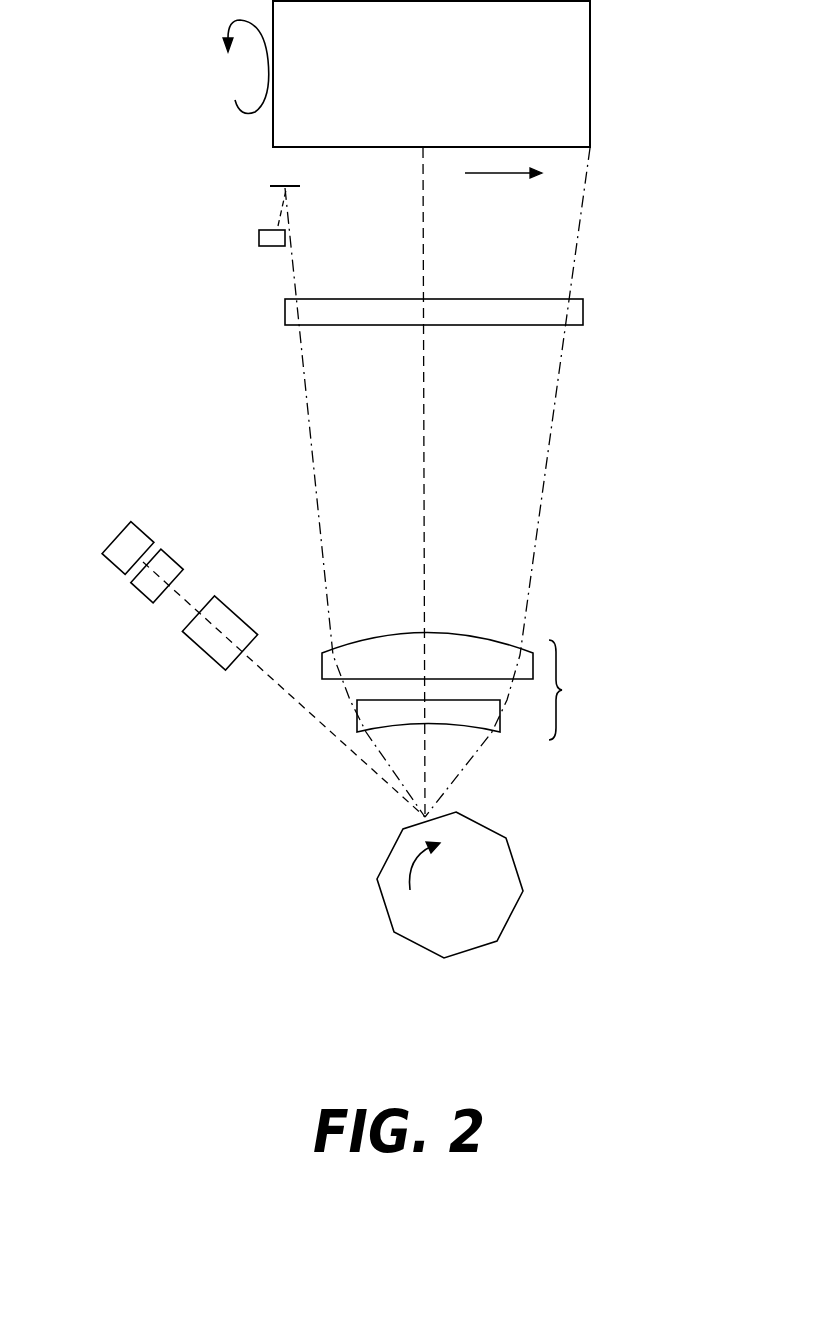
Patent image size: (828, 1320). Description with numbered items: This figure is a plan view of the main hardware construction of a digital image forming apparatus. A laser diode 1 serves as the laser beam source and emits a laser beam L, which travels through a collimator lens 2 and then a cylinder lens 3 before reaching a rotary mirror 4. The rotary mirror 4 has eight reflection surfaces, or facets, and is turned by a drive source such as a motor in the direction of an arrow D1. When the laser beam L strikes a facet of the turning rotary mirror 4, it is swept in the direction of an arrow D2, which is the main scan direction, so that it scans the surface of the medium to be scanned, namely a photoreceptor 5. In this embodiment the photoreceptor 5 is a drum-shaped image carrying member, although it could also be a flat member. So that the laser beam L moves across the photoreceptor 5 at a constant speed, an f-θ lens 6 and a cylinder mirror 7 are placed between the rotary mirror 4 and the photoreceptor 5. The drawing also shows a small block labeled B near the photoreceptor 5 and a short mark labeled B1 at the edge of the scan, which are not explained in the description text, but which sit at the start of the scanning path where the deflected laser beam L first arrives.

The laser diode 1 is at (114, 538).
The collimator lens 2 is at (138, 586).
The cylinder lens 3 is at (204, 650).
The rotary mirror 4 is at (523, 885).
The photoreceptor 5 is at (590, 83).
The f-θ lens 6 is at (456, 687).
The cylinder mirror 7 is at (583, 313).
The laser beam L is at (299, 704).
The beam detector B is at (259, 242).
The beam detection position B1 is at (272, 186).
The arrow D1 is at (402, 862).
The arrow D2 is at (505, 175).